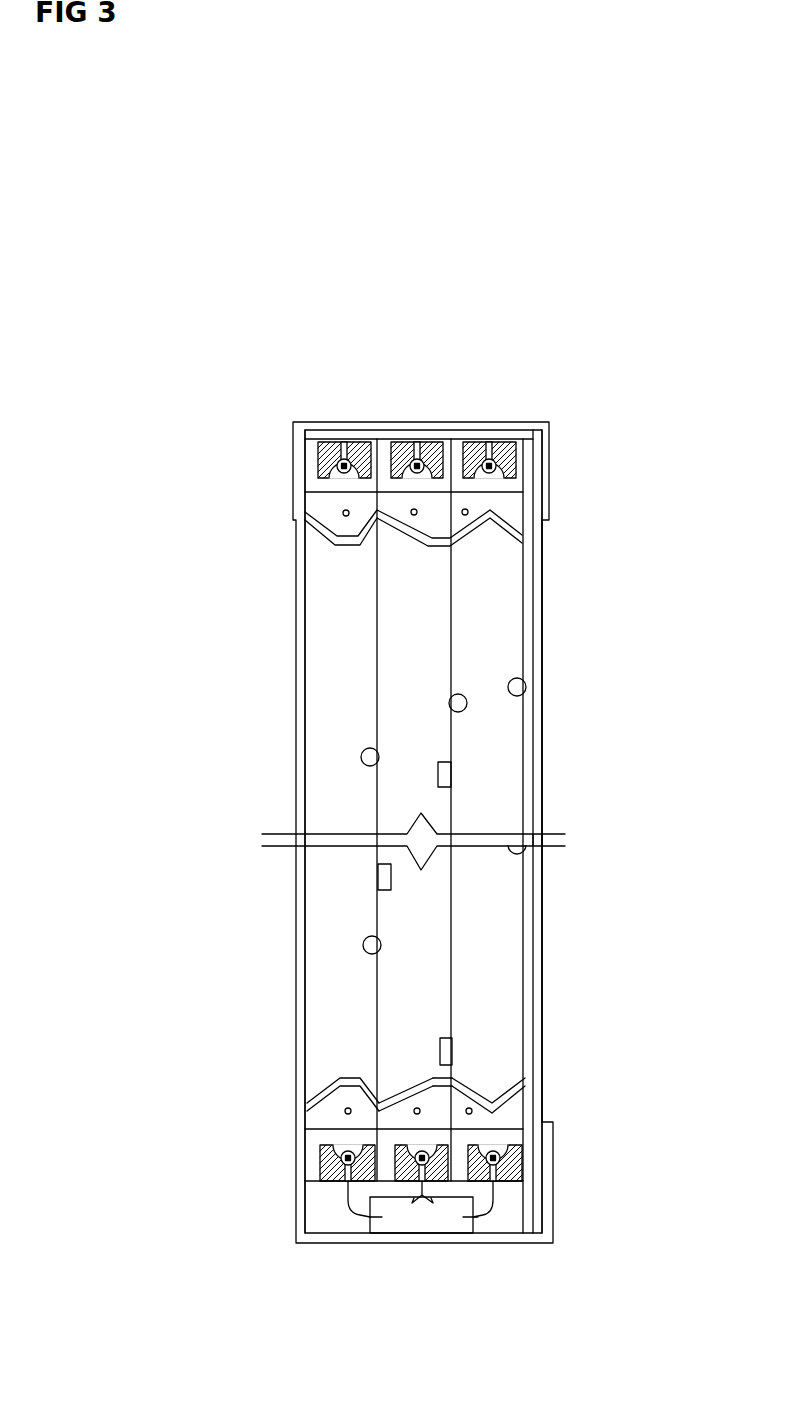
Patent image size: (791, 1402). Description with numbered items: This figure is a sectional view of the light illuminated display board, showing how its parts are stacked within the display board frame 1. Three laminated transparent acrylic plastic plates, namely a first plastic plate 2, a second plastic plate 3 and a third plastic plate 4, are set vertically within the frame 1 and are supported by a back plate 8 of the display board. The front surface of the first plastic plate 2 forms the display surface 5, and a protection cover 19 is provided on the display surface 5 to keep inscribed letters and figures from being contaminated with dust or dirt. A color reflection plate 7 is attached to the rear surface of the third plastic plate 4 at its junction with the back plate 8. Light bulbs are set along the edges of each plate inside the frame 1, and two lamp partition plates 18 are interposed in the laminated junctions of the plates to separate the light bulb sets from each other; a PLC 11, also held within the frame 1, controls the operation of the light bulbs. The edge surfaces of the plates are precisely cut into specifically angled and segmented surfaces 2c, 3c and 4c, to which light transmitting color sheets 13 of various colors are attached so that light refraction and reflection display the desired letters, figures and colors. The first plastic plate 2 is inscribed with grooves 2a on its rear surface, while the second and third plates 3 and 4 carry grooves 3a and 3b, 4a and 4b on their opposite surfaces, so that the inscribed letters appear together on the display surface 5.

The display board frame 1 is at (304, 493).
The first plastic plate 2 is at (317, 599).
The grooves 2a is at (362, 762).
The angled and segmented surfaces 2c is at (318, 1098).
The second plastic plate 3 is at (394, 620).
The grooves 3a is at (447, 778).
The grooves 3b is at (378, 880).
The angled and segmented surfaces 3c is at (378, 1090).
The third plastic plate 4 is at (463, 648).
The grooves 4a is at (518, 687).
The grooves 4b is at (460, 700).
The angled and segmented surfaces 4c is at (490, 1103).
The display surface 5 is at (305, 752).
The color reflection plate 7 is at (527, 577).
The back plate 8 is at (540, 895).
The PLC 11 is at (412, 1213).
The light transmitting color sheets 13 is at (517, 1088).
The lamp partition plates 18 is at (377, 493).
The protection cover 19 is at (297, 942).